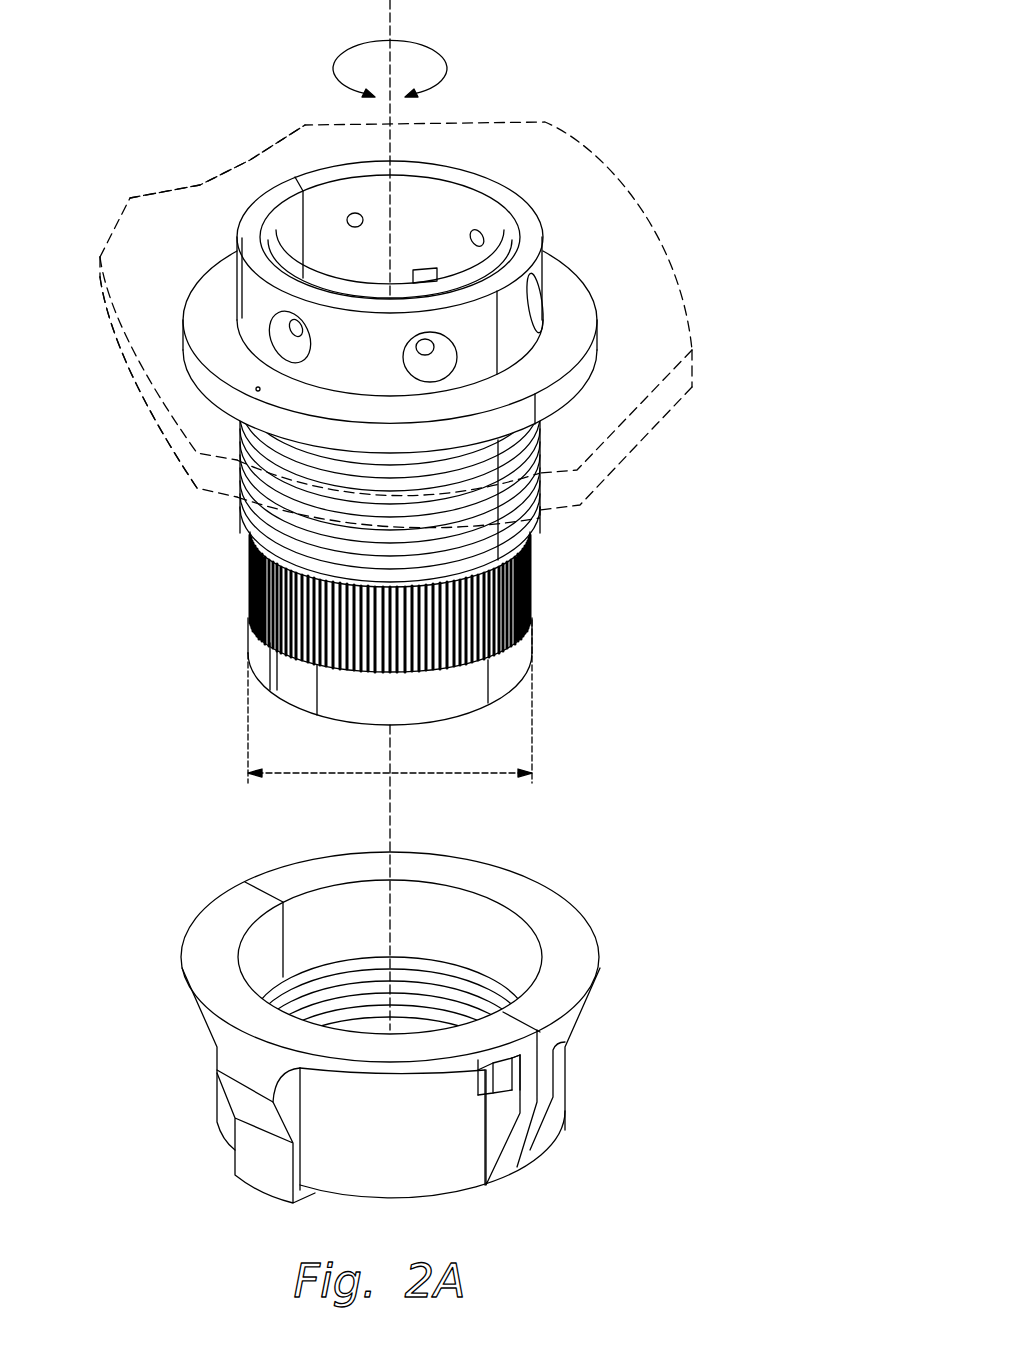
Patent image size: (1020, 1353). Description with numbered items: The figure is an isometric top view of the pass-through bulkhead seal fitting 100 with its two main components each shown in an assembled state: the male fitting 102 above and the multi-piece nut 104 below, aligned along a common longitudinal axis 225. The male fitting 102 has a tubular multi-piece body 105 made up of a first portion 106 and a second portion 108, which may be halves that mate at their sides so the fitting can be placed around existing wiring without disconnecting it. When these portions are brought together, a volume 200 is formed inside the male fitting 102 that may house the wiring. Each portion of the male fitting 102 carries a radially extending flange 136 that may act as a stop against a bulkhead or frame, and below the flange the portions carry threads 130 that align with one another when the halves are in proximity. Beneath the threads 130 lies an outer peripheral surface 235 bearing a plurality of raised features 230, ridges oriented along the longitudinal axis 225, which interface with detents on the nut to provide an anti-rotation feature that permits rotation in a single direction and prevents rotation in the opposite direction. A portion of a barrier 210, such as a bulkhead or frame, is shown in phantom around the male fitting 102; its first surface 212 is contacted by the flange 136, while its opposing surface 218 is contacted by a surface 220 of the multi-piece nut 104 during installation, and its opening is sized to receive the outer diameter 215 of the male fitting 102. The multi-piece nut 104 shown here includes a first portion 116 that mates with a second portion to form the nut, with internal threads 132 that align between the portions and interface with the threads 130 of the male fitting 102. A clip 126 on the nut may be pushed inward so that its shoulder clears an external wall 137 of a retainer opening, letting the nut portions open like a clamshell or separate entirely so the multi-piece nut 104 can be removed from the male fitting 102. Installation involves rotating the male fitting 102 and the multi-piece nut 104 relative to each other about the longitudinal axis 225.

The pass-through bulkhead seal fitting 100 is at (152, 82).
The male fitting 102 is at (228, 630).
The multi-piece nut 104 is at (178, 877).
The tubular multi-piece body 105 is at (562, 533).
The first portion 106 is at (473, 176).
The second portion 108 is at (244, 228).
The first portion 116 is at (218, 1043).
The clip 126 is at (480, 1085).
The threads 130 is at (268, 520).
The threads 132 is at (428, 978).
The radially extending flange 136 is at (599, 333).
The external wall 137 is at (522, 1073).
The volume 200 is at (442, 218).
The barrier 210 is at (98, 273).
The first surface 212 is at (122, 213).
The outer diameter 215 is at (426, 776).
The opposing surface 218 is at (114, 320).
The surface 220 is at (545, 893).
The longitudinal axis 225 is at (392, 17).
The raised features 230 is at (246, 578).
The outer peripheral surface 235 is at (531, 651).